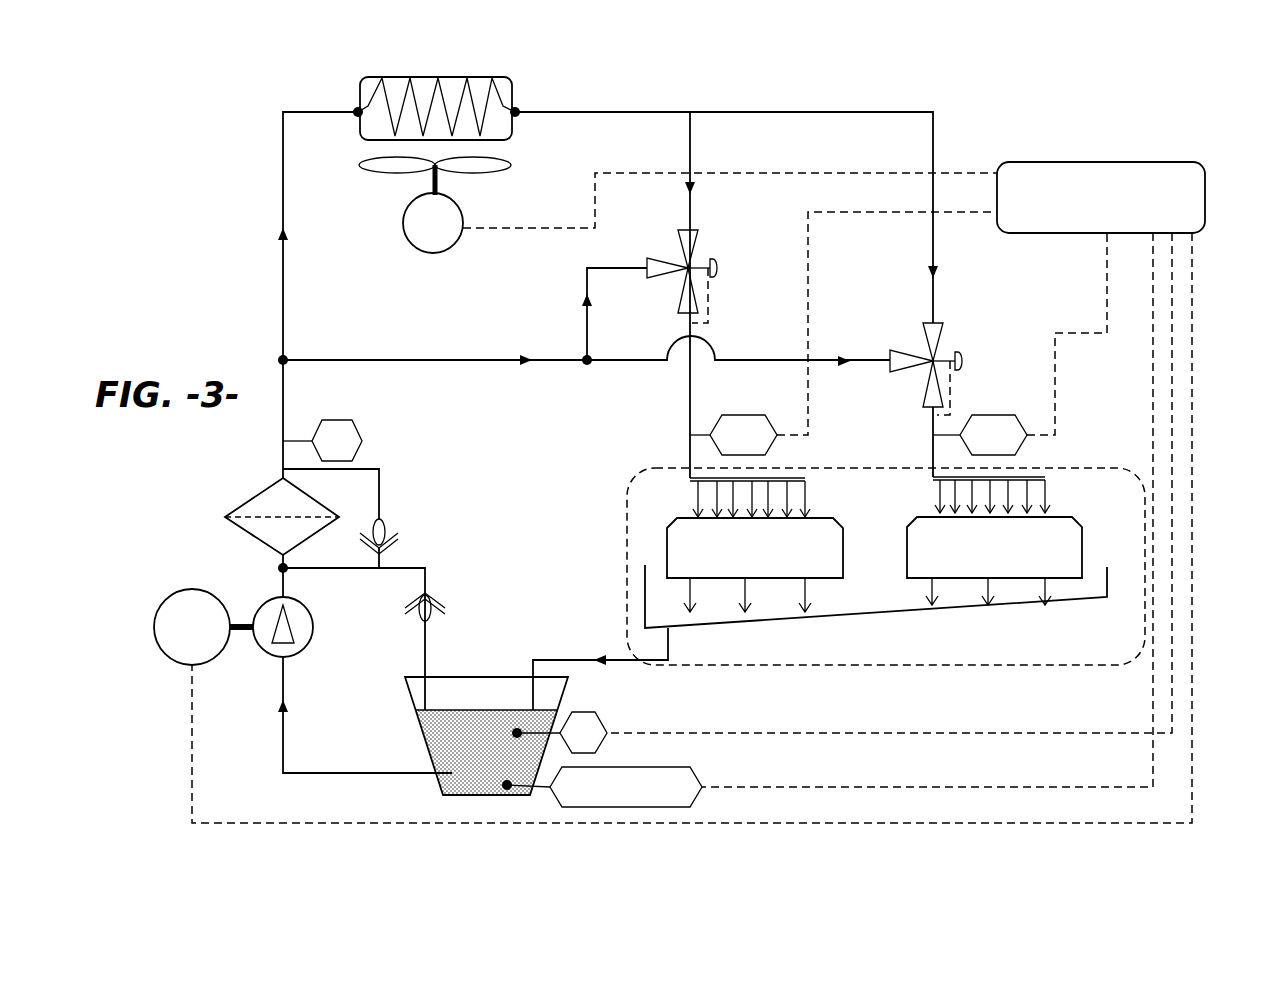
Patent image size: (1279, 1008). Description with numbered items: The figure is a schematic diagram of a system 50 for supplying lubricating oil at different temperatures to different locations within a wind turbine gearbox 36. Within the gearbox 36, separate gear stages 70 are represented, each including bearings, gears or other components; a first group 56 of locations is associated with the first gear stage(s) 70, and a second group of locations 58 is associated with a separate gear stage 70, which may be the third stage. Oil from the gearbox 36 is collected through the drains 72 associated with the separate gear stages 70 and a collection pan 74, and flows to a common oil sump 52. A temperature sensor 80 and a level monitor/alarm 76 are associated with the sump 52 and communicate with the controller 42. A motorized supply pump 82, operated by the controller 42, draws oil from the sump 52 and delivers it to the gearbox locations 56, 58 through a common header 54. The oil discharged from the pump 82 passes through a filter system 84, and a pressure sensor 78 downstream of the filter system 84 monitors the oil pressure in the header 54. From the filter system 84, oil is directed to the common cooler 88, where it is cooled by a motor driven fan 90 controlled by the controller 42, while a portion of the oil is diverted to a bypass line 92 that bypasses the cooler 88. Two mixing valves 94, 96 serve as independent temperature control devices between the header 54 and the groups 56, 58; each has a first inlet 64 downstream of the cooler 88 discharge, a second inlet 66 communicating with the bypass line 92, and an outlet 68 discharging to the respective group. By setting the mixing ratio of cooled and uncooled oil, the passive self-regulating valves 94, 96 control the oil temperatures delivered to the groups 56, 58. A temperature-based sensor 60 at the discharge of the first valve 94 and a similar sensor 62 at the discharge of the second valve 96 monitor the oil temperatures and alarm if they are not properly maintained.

The wind turbine gearbox 36 is at (1113, 467).
The controller 42 is at (1020, 233).
The system 50 is at (1205, 330).
The oil reservoir tank 52 is at (443, 745).
The common header 54 is at (732, 113).
The first group of gearbox locations 56 is at (823, 516).
The second group of gearbox locations 58 is at (1070, 515).
The temperature-based sensor 60 is at (750, 415).
The temperature-based sensor 62 is at (997, 415).
The first inlet 64 is at (796, 299).
The second inlet 66 is at (648, 275).
The outlet 68 is at (682, 314).
The gear stages 70 is at (675, 520).
The drains 72 is at (750, 600).
The collection pan 74 is at (848, 613).
The level monitor/alarm 76 is at (702, 787).
The pressure sensor 78 is at (362, 441).
The temperature sensor 80 is at (607, 733).
The motorized supply pump 82 is at (264, 656).
The filter system 84 is at (254, 500).
The common heat exchanger/cooler 88 is at (518, 140).
The motor driven fan 90 is at (426, 253).
The bypass line 92 is at (455, 362).
The first temperature control valve 94 is at (677, 256).
The second temperature control valve 96 is at (922, 349).